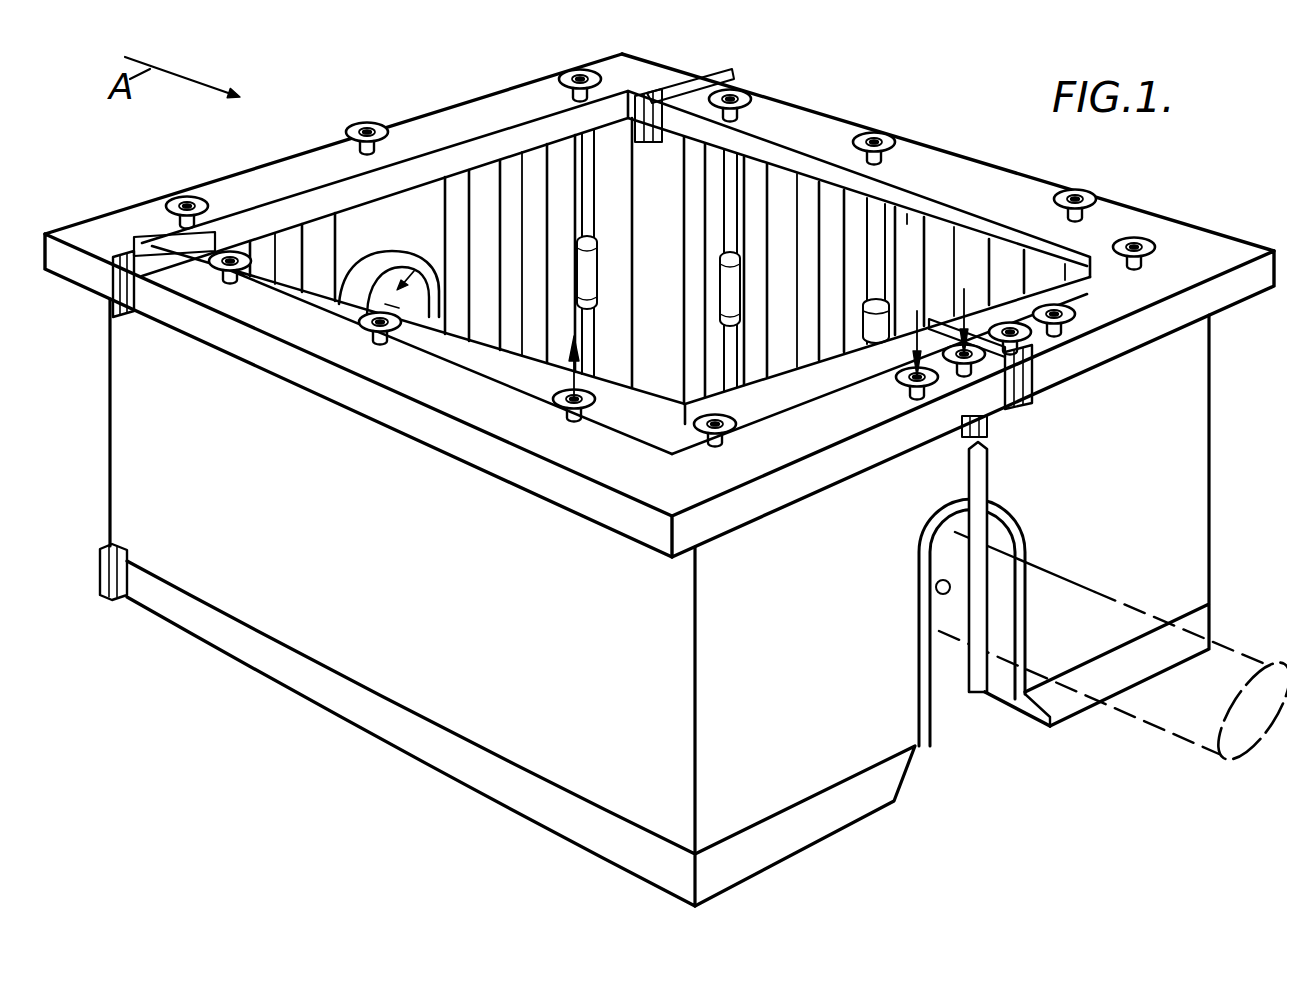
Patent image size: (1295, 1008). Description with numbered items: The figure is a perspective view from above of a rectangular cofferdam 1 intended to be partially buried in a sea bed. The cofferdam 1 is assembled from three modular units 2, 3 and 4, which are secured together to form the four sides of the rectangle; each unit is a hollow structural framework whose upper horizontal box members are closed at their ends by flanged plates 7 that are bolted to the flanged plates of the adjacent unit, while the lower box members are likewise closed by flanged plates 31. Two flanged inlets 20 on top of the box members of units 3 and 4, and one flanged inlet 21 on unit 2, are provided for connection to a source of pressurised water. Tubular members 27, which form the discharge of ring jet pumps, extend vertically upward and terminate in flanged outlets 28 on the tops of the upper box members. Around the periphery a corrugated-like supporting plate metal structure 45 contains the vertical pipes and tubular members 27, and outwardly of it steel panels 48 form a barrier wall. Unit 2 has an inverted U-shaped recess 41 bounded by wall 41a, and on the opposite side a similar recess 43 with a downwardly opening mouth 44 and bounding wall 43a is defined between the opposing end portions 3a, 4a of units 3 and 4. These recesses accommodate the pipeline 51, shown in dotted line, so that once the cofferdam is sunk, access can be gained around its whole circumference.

The cofferdam 1 is at (1225, 222).
The modular unit 2 is at (430, 113).
The modular unit 3 is at (160, 312).
The end portion 3a is at (933, 582).
The modular unit 4 is at (1028, 177).
The end portion 4a is at (1003, 625).
The flanged plate 7 is at (147, 248).
The flanged inlet 20 is at (1027, 343).
The flanged inlet 21 is at (353, 125).
The tubular member 27 is at (714, 287).
The flanged outlet 28 is at (167, 200).
The flanged plate 31 is at (100, 573).
The inverted U-shaped recess 41 is at (410, 273).
The bounding wall 41a is at (377, 262).
The recess 43 is at (968, 685).
The bounding wall 43a is at (1025, 523).
The mouth 44 is at (973, 750).
The supporting plate metal structure 45 is at (905, 225).
The steel panels 48 is at (145, 453).
The pipeline 51 is at (1093, 588).